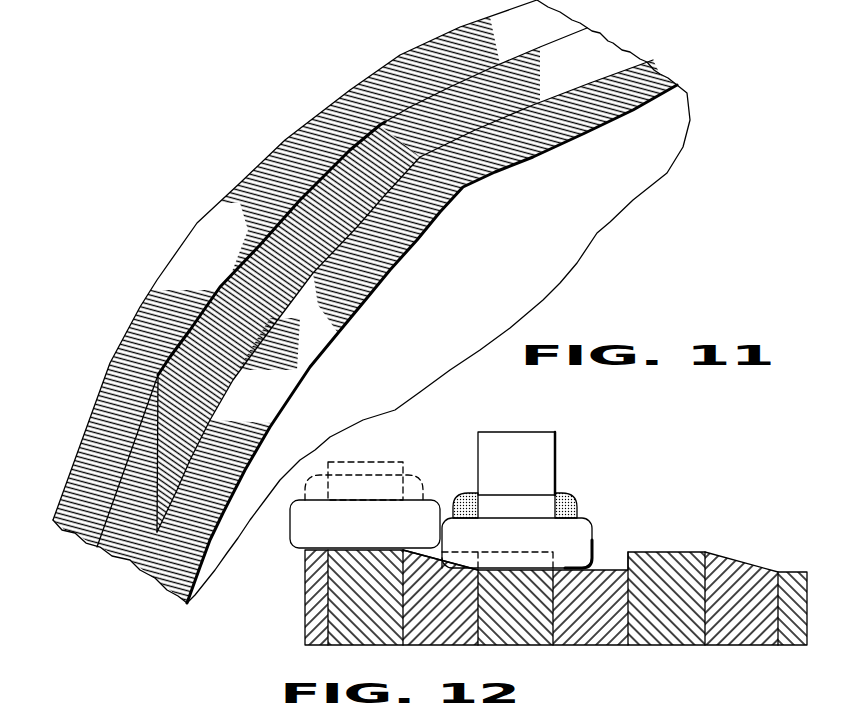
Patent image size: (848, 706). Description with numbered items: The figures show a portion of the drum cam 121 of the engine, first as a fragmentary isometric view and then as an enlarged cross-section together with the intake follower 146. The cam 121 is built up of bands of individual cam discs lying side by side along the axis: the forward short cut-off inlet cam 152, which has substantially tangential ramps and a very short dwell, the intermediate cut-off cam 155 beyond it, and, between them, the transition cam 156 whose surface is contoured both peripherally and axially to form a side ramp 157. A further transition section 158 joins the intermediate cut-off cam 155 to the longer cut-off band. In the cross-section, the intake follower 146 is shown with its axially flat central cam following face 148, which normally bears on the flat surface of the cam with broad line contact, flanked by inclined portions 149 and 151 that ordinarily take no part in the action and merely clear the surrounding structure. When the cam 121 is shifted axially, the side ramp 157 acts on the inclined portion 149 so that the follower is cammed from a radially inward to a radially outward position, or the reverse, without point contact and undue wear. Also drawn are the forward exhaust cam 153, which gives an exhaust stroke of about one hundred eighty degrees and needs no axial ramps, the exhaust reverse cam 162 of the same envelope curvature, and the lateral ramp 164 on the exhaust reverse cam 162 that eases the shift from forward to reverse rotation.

In FIG. 11, the cam 121 is at (601, 236).
In FIG. 12, the cam 121 is at (673, 550).
In FIG. 12, the intake follower 146 is at (423, 503).
In FIG. 12, the central cam following face 148 is at (510, 568).
In FIG. 12, the inclined portion 149 is at (458, 568).
In FIG. 12, the inclined portion 151 is at (572, 568).
In FIG. 11, the forward short cut-off inlet cam 152 is at (419, 244).
In FIG. 12, the forward short cut-off inlet cam 152 is at (522, 638).
In FIG. 12, the forward exhaust cam 153 is at (794, 574).
In FIG. 11, the intermediate cut-off cam 155 is at (240, 198).
In FIG. 12, the intermediate cut-off cam 155 is at (375, 640).
In FIG. 11, the transition cam 156 is at (130, 557).
In FIG. 12, the transition cam 156 is at (447, 638).
In FIG. 11, the side ramp 157 is at (220, 287).
In FIG. 12, the side ramp 157 is at (445, 562).
In FIG. 12, the transition section 158 is at (315, 628).
In FIG. 12, the exhaust reverse cam 162 is at (668, 637).
In FIG. 12, the ramp 164 is at (748, 570).